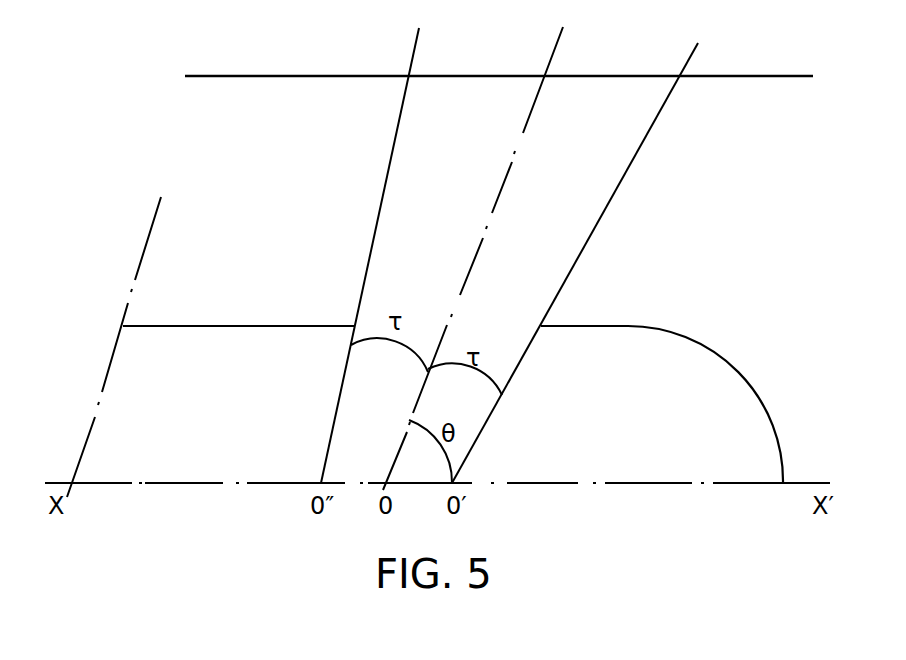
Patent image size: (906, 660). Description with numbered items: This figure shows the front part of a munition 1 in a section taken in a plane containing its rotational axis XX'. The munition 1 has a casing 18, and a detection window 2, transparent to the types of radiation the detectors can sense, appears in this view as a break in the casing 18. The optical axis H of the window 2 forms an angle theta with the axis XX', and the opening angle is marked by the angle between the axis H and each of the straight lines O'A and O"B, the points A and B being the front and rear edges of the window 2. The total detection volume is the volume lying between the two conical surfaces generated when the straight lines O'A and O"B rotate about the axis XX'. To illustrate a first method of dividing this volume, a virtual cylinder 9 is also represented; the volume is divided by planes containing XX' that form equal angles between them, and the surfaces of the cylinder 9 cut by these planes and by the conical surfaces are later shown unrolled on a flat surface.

The munition 1 is at (156, 353).
The casing 18 is at (233, 325).
The detection window 2 is at (508, 310).
The virtual cylinder 9 is at (706, 77).
The optical axis of the window H is at (522, 133).
The front edge of the window A is at (550, 318).
The rear edge of the window B is at (354, 322).